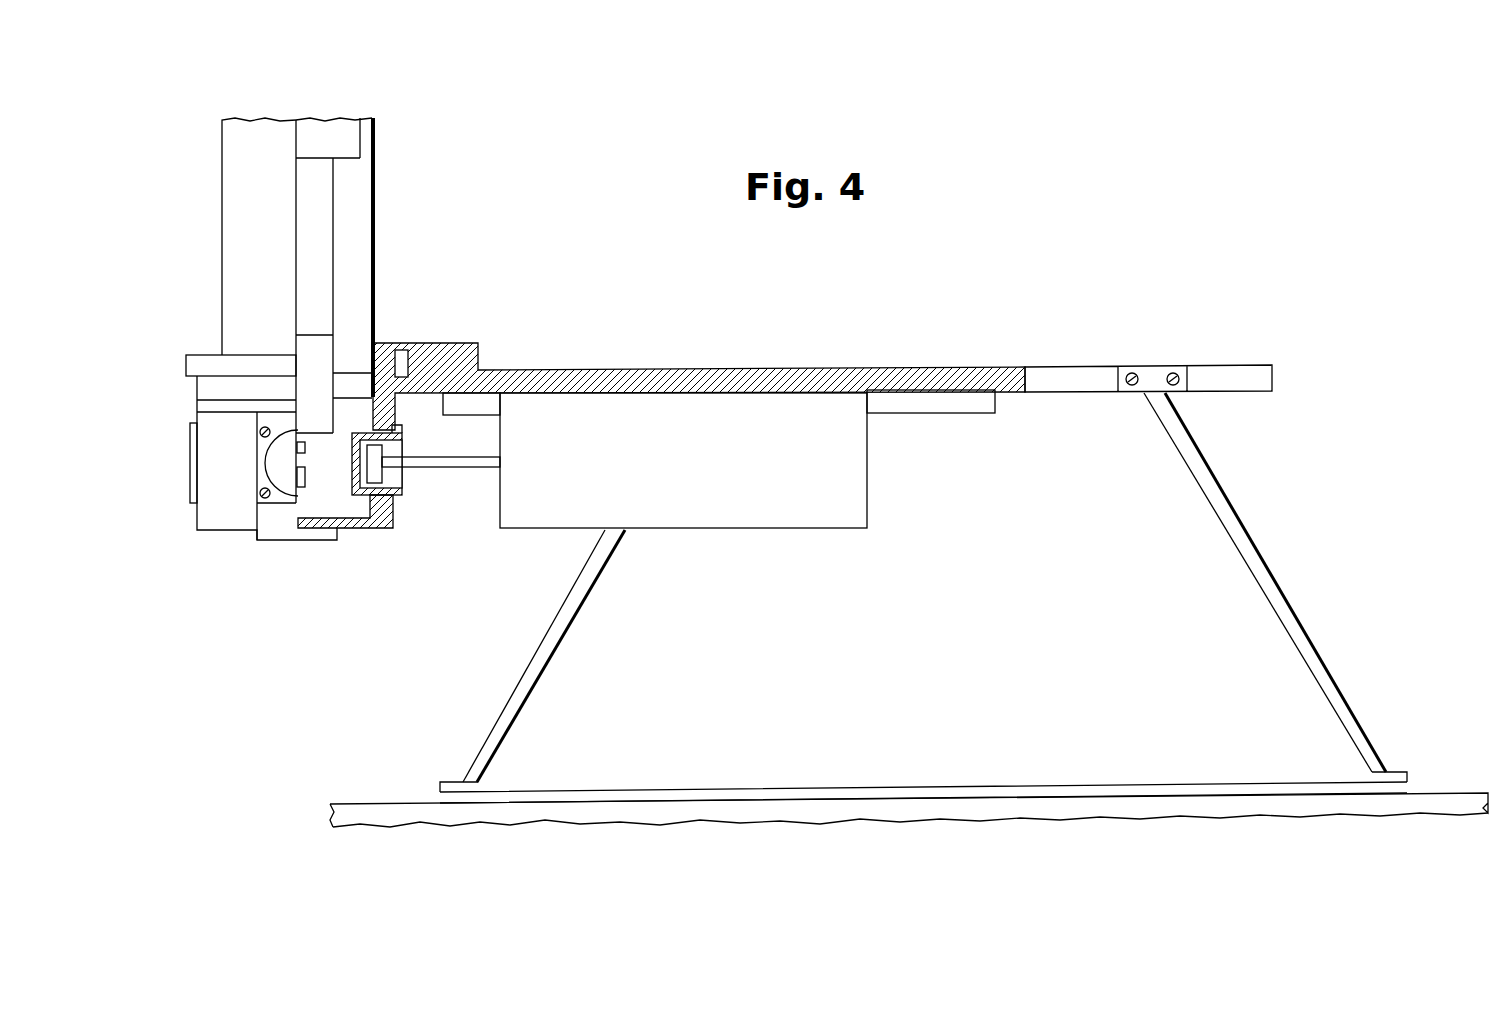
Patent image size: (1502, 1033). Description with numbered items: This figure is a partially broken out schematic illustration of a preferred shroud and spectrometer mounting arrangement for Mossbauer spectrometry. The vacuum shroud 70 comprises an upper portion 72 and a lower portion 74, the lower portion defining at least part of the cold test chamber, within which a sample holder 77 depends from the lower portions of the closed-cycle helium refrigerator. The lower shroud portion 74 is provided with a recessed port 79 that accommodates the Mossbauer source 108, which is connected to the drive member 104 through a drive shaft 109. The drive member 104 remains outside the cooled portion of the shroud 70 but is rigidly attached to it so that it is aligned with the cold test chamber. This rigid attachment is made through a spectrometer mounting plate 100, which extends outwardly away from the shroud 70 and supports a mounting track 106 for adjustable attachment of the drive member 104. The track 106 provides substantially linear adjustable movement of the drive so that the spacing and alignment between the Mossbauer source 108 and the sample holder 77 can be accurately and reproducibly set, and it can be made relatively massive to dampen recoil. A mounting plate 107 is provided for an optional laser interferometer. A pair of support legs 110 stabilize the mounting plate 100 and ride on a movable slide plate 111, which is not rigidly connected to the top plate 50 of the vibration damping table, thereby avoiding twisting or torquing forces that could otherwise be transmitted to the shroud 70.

The top plate 50 is at (1460, 797).
The shroud 70 is at (386, 252).
The upper portion 72 is at (210, 247).
The lower portion 74 is at (173, 443).
The sample holder 77 is at (306, 477).
The recessed port 79 is at (355, 465).
The spectrometer mounting plate 100 is at (460, 343).
The drive member 104 is at (703, 422).
The mounting track 106 is at (937, 396).
The mounting plate 107 is at (1230, 375).
The Mossbauer source 108 is at (385, 473).
The drive shaft 109 is at (466, 465).
The support legs 110 is at (597, 570).
The slide plate 111 is at (962, 790).